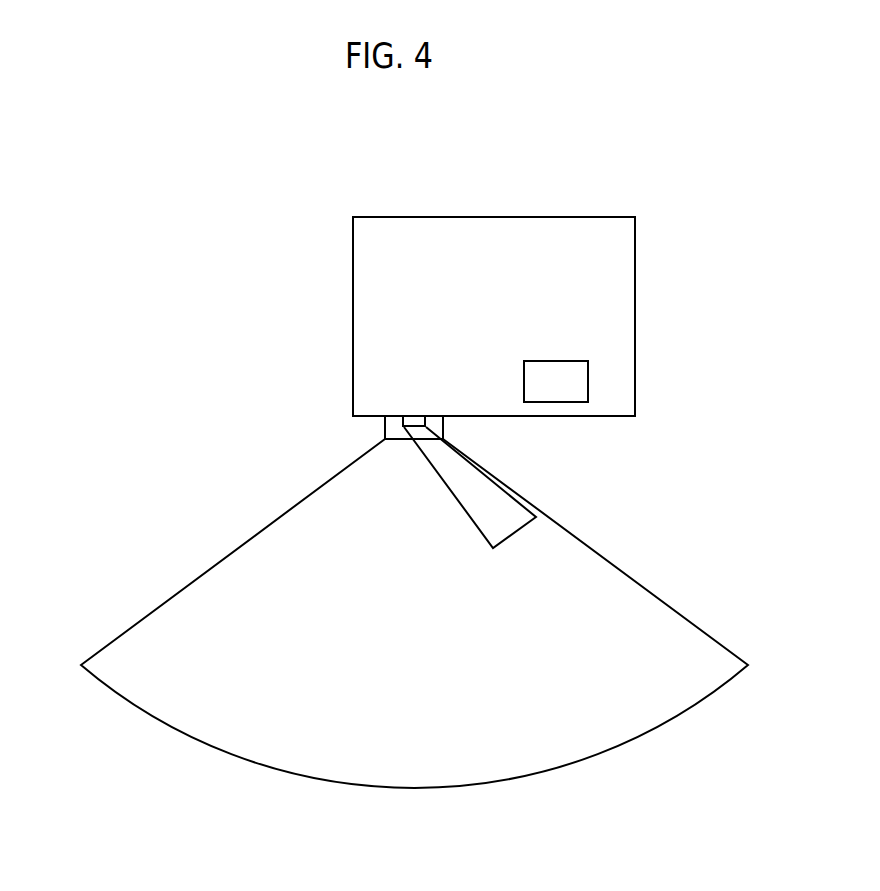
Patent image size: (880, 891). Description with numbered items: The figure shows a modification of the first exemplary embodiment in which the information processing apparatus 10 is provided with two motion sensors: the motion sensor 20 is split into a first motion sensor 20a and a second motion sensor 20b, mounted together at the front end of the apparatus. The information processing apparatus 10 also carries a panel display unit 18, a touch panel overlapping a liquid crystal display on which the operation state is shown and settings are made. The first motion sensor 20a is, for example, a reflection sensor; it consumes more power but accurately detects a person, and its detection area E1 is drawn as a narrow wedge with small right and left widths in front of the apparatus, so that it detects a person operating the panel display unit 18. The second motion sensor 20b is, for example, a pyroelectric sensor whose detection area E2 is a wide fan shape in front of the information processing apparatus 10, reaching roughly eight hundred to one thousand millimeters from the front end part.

The information processing apparatus 10 is at (595, 215).
The panel display unit 18 is at (553, 361).
The motion sensor 20 is at (385, 433).
The first motion sensor 20a is at (412, 416).
The second motion sensor 20b is at (446, 423).
The area E1 is at (523, 533).
The area E2 is at (690, 705).